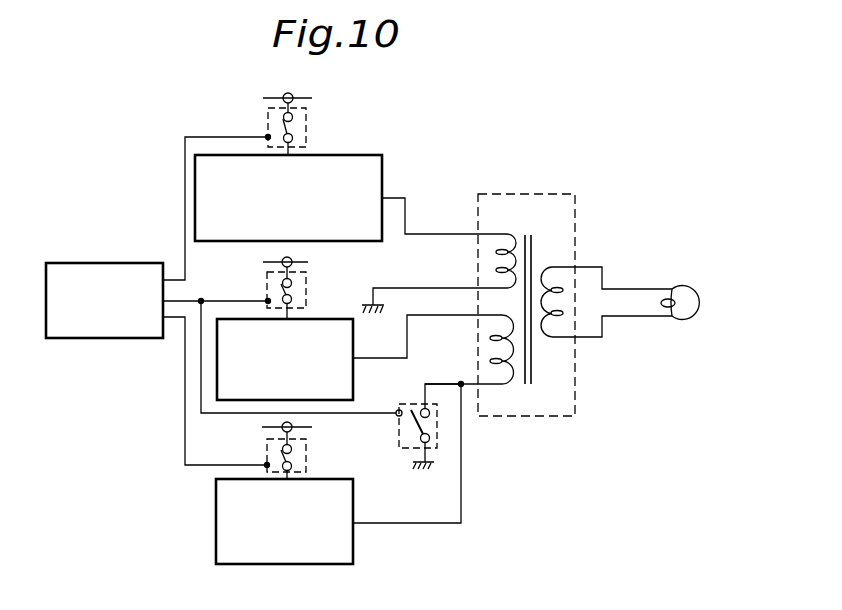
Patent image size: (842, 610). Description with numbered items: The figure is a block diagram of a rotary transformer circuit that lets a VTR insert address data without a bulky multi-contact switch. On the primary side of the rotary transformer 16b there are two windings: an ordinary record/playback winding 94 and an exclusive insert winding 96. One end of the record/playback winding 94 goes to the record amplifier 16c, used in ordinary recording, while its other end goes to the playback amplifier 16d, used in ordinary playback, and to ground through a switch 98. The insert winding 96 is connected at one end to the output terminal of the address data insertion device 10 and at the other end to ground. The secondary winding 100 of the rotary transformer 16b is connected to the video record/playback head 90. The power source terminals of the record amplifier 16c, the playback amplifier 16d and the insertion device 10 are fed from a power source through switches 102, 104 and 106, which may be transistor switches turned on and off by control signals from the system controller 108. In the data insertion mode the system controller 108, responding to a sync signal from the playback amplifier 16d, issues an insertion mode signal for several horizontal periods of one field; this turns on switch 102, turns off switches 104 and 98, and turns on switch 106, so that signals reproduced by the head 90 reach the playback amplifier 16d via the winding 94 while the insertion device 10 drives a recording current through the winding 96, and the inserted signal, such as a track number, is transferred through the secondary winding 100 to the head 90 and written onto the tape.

The address data insertion device 10 is at (382, 168).
The rotary transformer 16b is at (575, 225).
The record amplifier 16c is at (330, 318).
The playback amplifier 16d is at (340, 480).
The record/playback head 90 is at (687, 286).
The record/playback winding 94 is at (498, 384).
The exclusive insert winding 96 is at (500, 263).
The switch 98 is at (419, 427).
The secondary winding 100 is at (556, 354).
The switch 102 is at (308, 121).
The switch 104 is at (308, 273).
The switch 106 is at (313, 443).
The system controller 108 is at (135, 262).